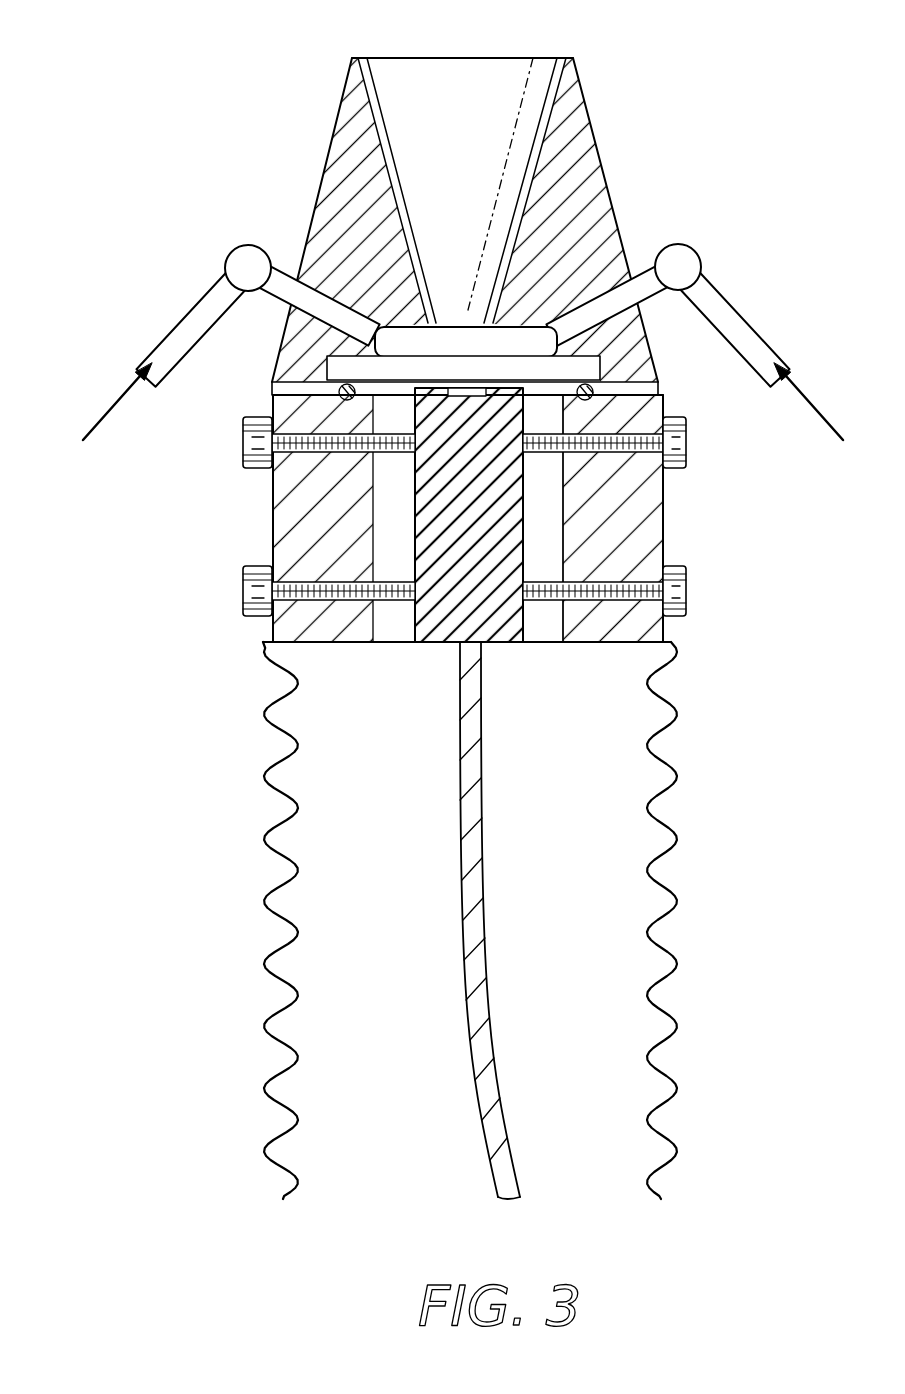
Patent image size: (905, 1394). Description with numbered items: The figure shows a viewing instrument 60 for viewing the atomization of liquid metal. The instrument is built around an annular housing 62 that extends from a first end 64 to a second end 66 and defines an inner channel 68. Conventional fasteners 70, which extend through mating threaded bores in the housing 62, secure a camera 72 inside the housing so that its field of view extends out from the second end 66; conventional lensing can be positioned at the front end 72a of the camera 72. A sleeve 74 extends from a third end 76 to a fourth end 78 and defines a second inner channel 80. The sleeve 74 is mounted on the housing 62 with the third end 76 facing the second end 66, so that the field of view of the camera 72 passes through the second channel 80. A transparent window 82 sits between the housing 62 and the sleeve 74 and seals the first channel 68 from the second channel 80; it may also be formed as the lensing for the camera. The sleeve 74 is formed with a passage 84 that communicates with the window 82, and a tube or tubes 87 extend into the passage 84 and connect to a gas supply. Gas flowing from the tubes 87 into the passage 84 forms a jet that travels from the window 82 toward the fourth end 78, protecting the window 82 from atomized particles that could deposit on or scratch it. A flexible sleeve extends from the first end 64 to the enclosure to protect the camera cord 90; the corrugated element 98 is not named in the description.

The viewing instrument 60 is at (118, 96).
The annular housing 62 is at (665, 545).
The first end 64 is at (580, 645).
The second end 66 is at (633, 391).
The inner channel 68 is at (547, 643).
The fasteners 70 is at (680, 463).
The camera 72 is at (433, 645).
The front end 72a is at (473, 395).
The sleeve 74 is at (580, 182).
The third end 76 is at (272, 385).
The fourth end 78 is at (385, 57).
The second inner channel 80 is at (475, 149).
The transparent window 82 is at (335, 372).
The passage 84 is at (590, 308).
The tubes 87 is at (700, 263).
The camera cord 90 is at (488, 940).
The corrugated boot 98 is at (680, 715).